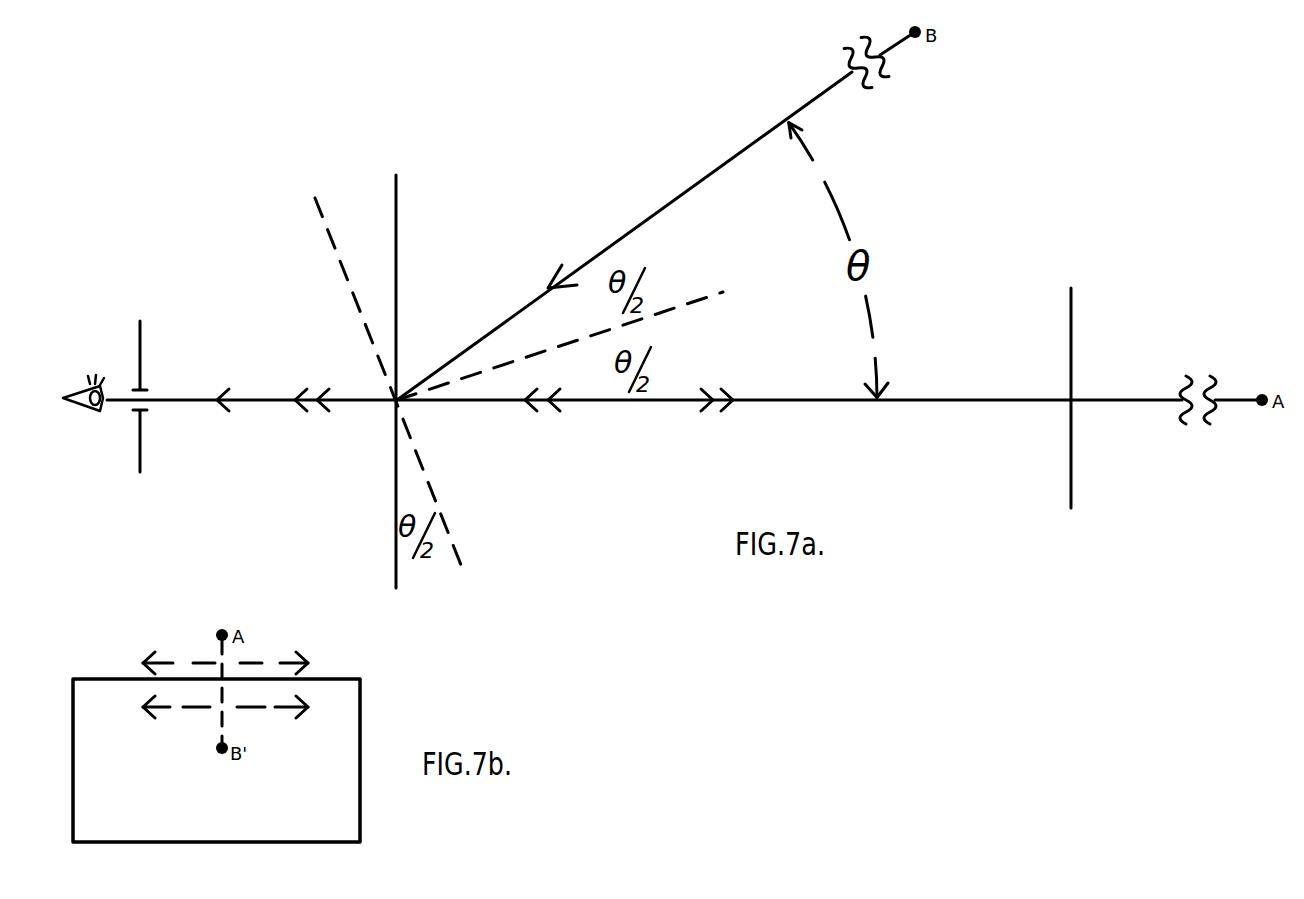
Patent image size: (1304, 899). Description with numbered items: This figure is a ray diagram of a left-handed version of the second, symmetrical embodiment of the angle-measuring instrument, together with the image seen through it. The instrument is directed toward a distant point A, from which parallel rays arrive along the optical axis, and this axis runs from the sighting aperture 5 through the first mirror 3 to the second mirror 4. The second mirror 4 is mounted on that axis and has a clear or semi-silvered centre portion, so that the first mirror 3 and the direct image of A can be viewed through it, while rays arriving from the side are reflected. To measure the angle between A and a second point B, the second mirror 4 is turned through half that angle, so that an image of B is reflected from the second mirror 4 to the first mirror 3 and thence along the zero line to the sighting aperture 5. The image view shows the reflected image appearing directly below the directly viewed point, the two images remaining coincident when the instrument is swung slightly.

In FIG. 7A, the first mirror 3 is at (1072, 495).
In FIG. 7B, the first mirror 3 is at (344, 744).
In FIG. 7A, the second mirror 4 is at (393, 530).
In FIG. 7A, the sighting aperture 5 is at (135, 408).